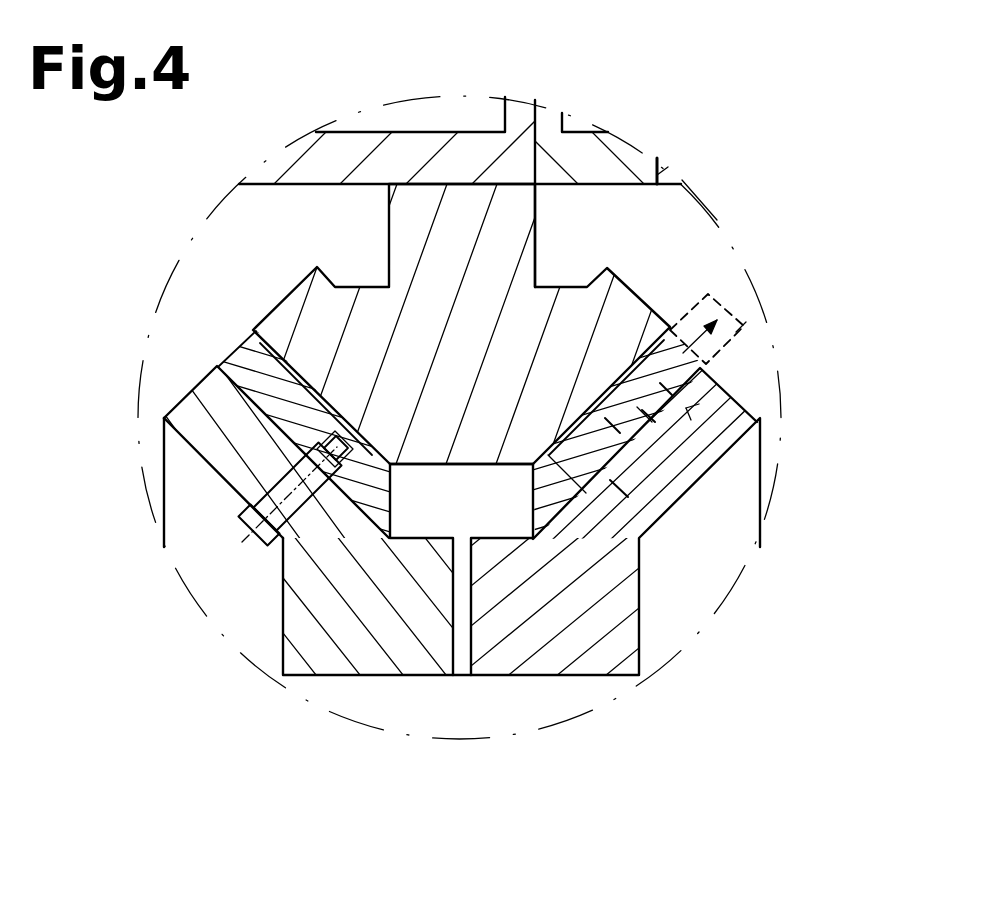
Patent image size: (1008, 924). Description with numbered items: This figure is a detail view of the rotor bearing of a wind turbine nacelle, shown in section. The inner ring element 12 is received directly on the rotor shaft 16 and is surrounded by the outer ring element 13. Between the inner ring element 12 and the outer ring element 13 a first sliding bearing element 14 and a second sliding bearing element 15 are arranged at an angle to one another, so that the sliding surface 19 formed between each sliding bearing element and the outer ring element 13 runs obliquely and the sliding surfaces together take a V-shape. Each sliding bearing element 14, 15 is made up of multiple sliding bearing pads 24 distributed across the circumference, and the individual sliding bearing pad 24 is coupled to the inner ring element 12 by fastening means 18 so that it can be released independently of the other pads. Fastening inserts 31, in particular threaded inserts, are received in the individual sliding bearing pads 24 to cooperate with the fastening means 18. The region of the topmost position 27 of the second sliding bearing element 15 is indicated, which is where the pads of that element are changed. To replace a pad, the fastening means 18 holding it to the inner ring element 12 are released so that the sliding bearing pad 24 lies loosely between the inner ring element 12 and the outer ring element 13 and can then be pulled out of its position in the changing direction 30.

The inner ring element 12 is at (215, 455).
The outer ring element 13 is at (622, 300).
The first sliding bearing element 14 is at (250, 356).
The second sliding bearing element 15 is at (648, 415).
The rotor shaft 16 is at (553, 690).
The fastening means 18 is at (245, 530).
The sliding surface 19 is at (607, 397).
The sliding bearing pad 24 is at (746, 322).
The topmost position 27 is at (739, 282).
The changing direction 30 is at (711, 345).
The fastening insert 31 is at (343, 462).